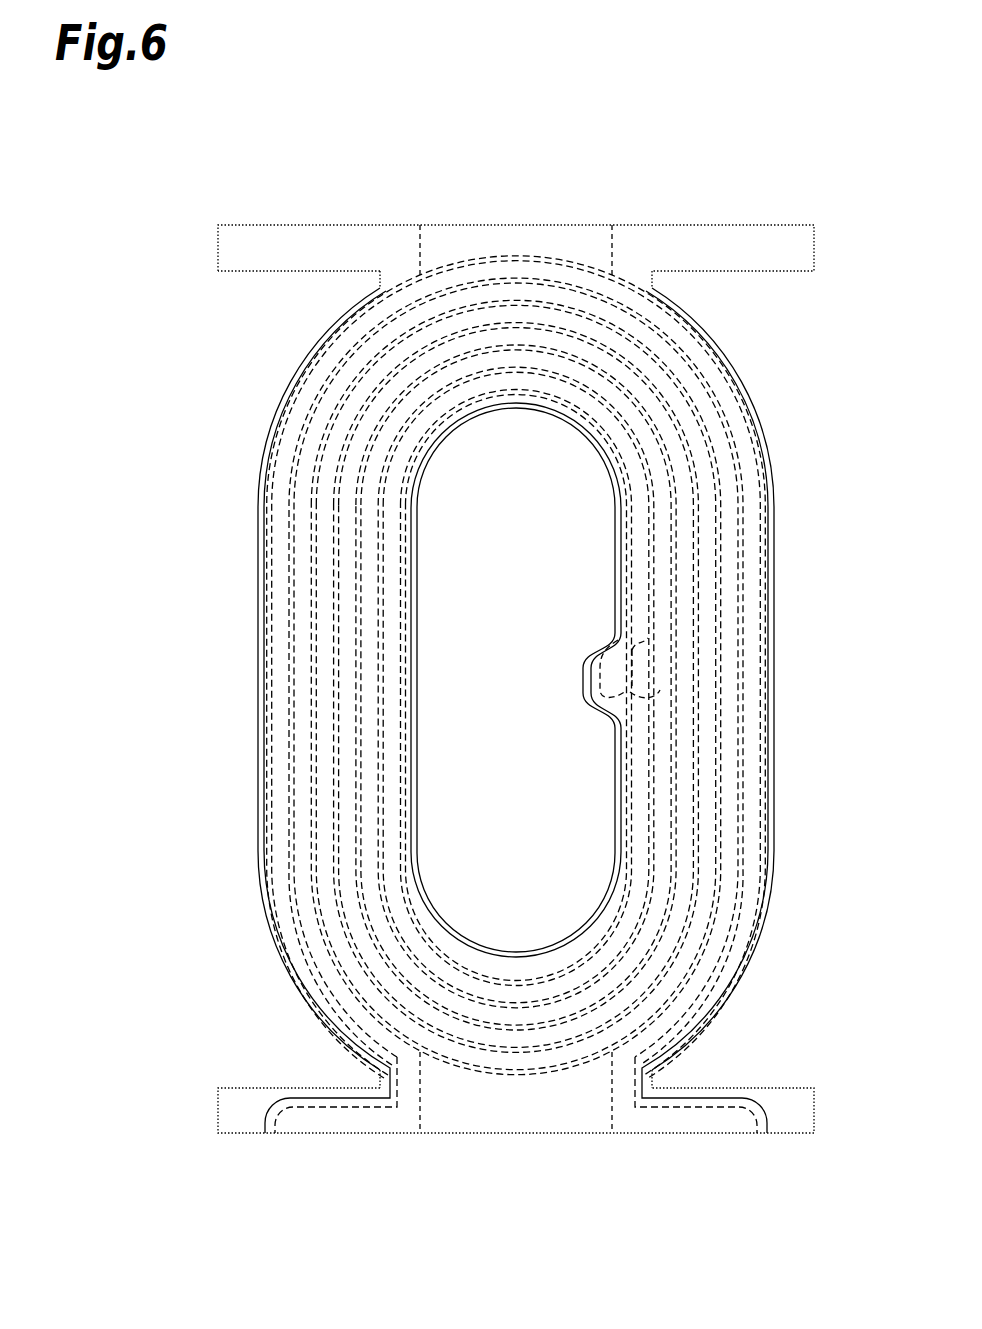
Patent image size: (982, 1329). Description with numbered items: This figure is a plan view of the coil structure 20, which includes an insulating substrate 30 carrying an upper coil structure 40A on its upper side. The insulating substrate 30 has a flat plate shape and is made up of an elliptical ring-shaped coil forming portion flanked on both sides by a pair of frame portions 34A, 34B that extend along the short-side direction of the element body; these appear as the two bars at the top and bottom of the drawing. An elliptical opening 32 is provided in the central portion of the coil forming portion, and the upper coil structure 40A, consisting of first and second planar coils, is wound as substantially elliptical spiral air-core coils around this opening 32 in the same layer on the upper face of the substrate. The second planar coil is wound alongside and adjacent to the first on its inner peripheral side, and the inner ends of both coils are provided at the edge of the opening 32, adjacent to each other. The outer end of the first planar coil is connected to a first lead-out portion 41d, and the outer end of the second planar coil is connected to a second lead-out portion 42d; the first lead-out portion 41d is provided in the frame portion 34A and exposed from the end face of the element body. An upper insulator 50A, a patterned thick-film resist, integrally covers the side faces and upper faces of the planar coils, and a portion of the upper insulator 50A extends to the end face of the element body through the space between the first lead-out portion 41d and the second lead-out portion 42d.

The coil structure 20 is at (218, 182).
The insulating substrate 30 is at (258, 520).
The opening 32 is at (418, 604).
The frame portion 34A is at (243, 1097).
The frame portion 34B is at (770, 240).
The upper coil structure 40A is at (262, 845).
The first lead-out portion 41d is at (338, 1117).
The second lead-out portion 42d is at (690, 1117).
The upper insulator 50A is at (278, 413).